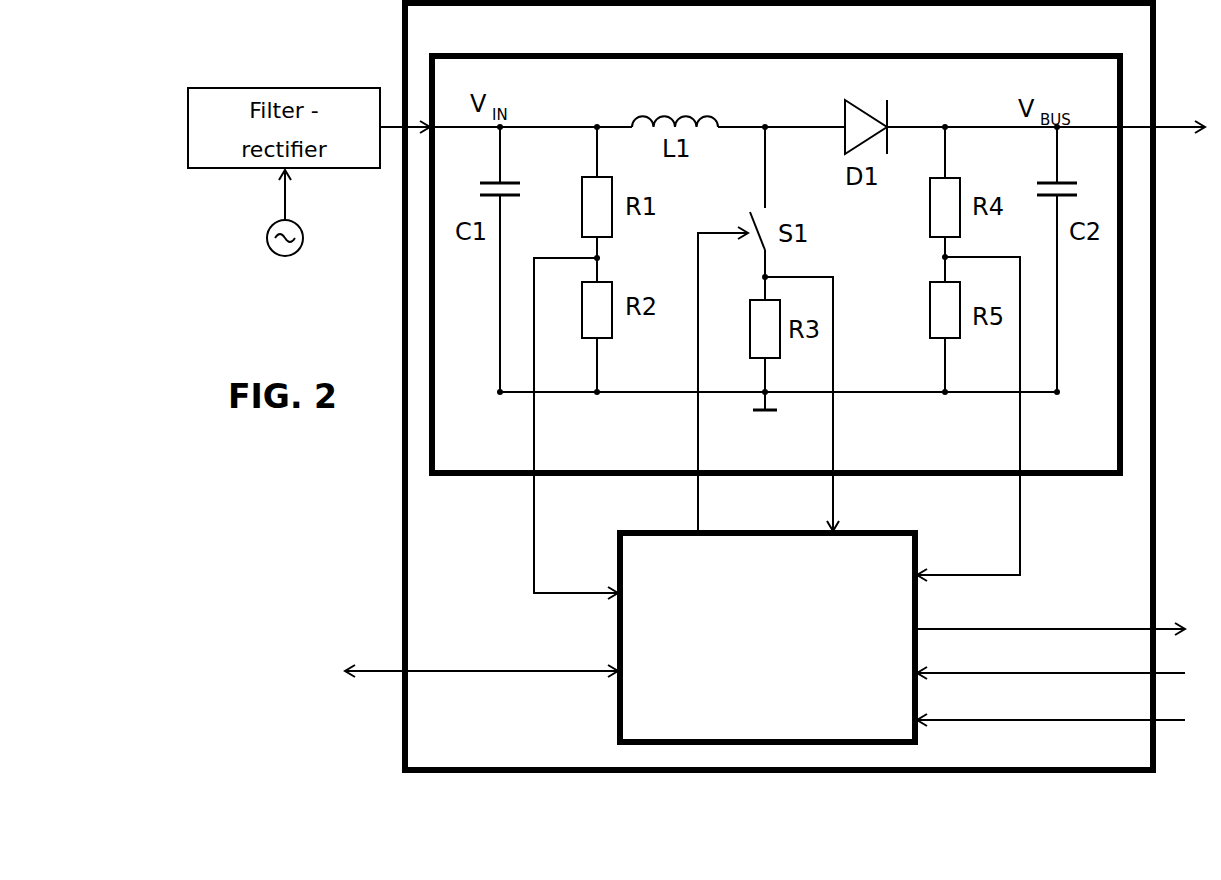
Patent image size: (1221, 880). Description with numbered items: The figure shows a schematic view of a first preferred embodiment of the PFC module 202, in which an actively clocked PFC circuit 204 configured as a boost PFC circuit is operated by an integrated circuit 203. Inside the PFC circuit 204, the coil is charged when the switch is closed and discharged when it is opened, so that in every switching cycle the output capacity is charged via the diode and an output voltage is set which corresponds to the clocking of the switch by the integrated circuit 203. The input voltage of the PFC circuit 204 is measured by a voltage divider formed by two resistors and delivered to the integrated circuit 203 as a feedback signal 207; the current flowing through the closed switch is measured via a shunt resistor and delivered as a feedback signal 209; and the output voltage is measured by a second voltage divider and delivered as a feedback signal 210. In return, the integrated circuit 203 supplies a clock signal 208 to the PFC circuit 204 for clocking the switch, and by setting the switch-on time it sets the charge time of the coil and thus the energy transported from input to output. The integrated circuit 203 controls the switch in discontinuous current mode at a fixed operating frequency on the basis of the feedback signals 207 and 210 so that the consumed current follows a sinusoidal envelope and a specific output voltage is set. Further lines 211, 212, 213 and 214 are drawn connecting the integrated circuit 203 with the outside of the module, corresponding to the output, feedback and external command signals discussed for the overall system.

The PFC module 202 is at (779, 386).
The integrated circuit 203 is at (767, 637).
The PFC circuit 204 is at (776, 264).
The signal 207 is at (548, 428).
The clock signal 208 is at (697, 380).
The signal 209 is at (831, 404).
The signal 210 is at (996, 419).
The controller output signal 211 is at (1050, 616).
The controller input signal 212 is at (1051, 661).
The controller input signal 213 is at (1051, 708).
The bidirectional communication signal 214 is at (481, 685).